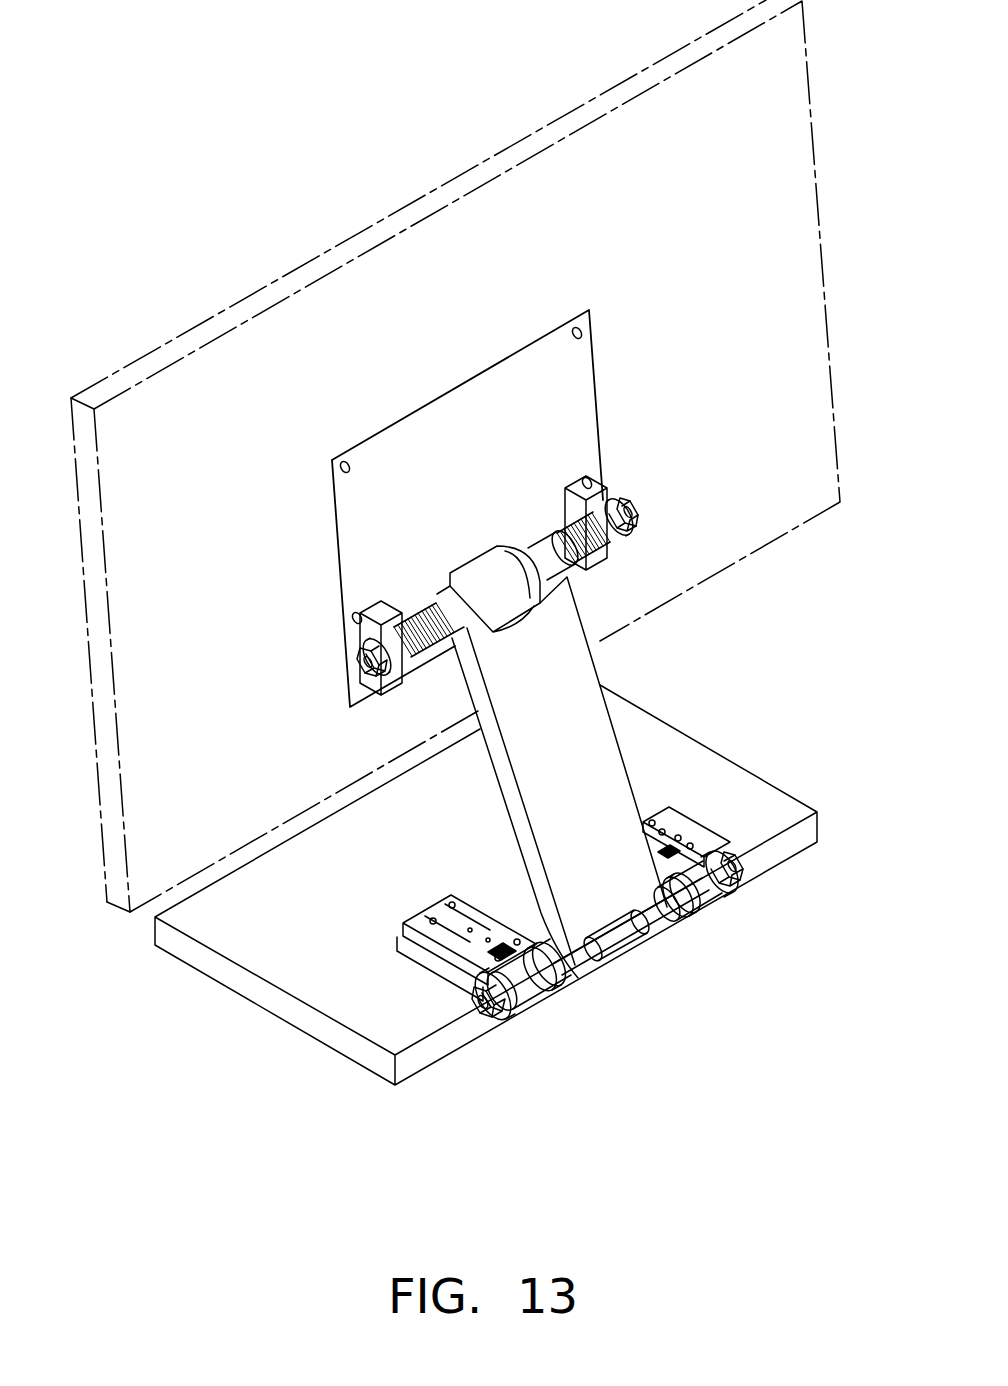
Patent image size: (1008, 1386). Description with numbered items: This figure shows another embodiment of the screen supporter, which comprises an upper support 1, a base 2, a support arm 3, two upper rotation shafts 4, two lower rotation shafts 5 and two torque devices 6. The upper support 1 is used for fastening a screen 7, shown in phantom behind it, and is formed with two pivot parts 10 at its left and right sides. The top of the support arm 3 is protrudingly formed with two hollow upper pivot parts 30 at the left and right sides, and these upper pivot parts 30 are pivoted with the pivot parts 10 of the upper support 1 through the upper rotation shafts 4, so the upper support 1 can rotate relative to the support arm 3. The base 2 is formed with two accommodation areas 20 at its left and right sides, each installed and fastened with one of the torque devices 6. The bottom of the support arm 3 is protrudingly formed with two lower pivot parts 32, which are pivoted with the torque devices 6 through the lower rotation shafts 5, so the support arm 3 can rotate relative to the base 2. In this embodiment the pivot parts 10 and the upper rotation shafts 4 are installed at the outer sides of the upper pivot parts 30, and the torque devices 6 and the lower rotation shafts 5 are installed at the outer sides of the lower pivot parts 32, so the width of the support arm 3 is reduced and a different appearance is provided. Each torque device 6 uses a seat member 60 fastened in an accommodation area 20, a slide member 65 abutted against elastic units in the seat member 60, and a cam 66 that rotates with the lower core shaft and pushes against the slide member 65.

The upper support 1 is at (462, 415).
The base 2 is at (290, 967).
The support arm 3 is at (580, 680).
The upper rotation shaft 4 is at (645, 512).
The lower rotation shaft 5 is at (755, 862).
The torque device 6 is at (660, 833).
The screen 7 is at (390, 232).
The pivot part 10 is at (583, 508).
The accommodation area 20 is at (420, 947).
The upper pivot part 30 is at (538, 548).
The lower pivot part 32 is at (667, 920).
The seat member 60 is at (440, 917).
The slide member 65 is at (687, 860).
The cam 66 is at (707, 887).